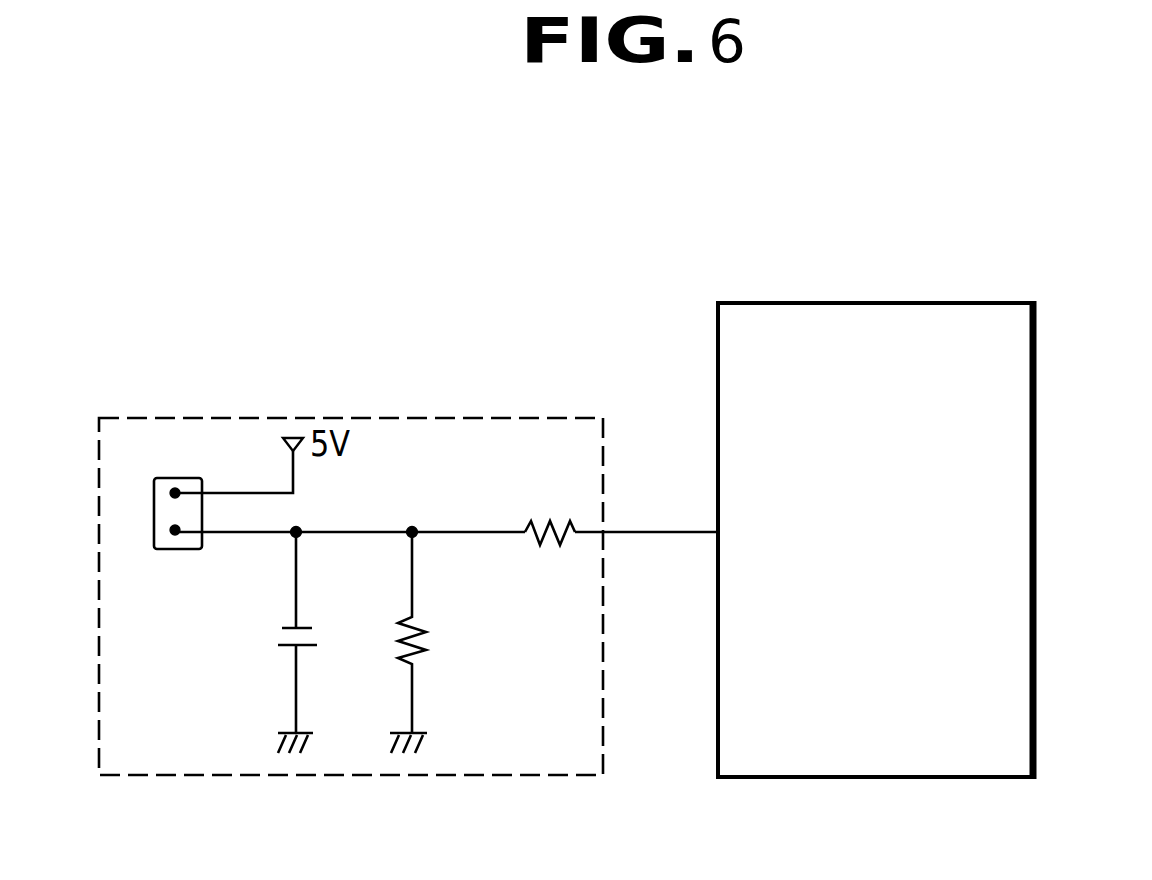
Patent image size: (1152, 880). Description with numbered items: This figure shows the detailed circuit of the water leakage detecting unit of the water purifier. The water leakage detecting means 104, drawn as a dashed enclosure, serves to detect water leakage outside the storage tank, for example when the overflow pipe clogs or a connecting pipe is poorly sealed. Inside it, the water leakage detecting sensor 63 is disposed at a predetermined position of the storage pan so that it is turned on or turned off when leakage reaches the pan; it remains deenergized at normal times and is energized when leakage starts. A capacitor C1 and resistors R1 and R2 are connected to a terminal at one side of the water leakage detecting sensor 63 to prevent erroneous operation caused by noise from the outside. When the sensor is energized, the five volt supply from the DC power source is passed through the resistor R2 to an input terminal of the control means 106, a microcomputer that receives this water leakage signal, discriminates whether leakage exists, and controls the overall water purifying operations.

The water leakage detecting means 104 is at (122, 773).
The control means 106 is at (1035, 303).
The water leakage detecting sensor 63 is at (158, 549).
The capacitor C1 is at (278, 642).
The resistor R1 is at (430, 642).
The resistor R2 is at (550, 513).